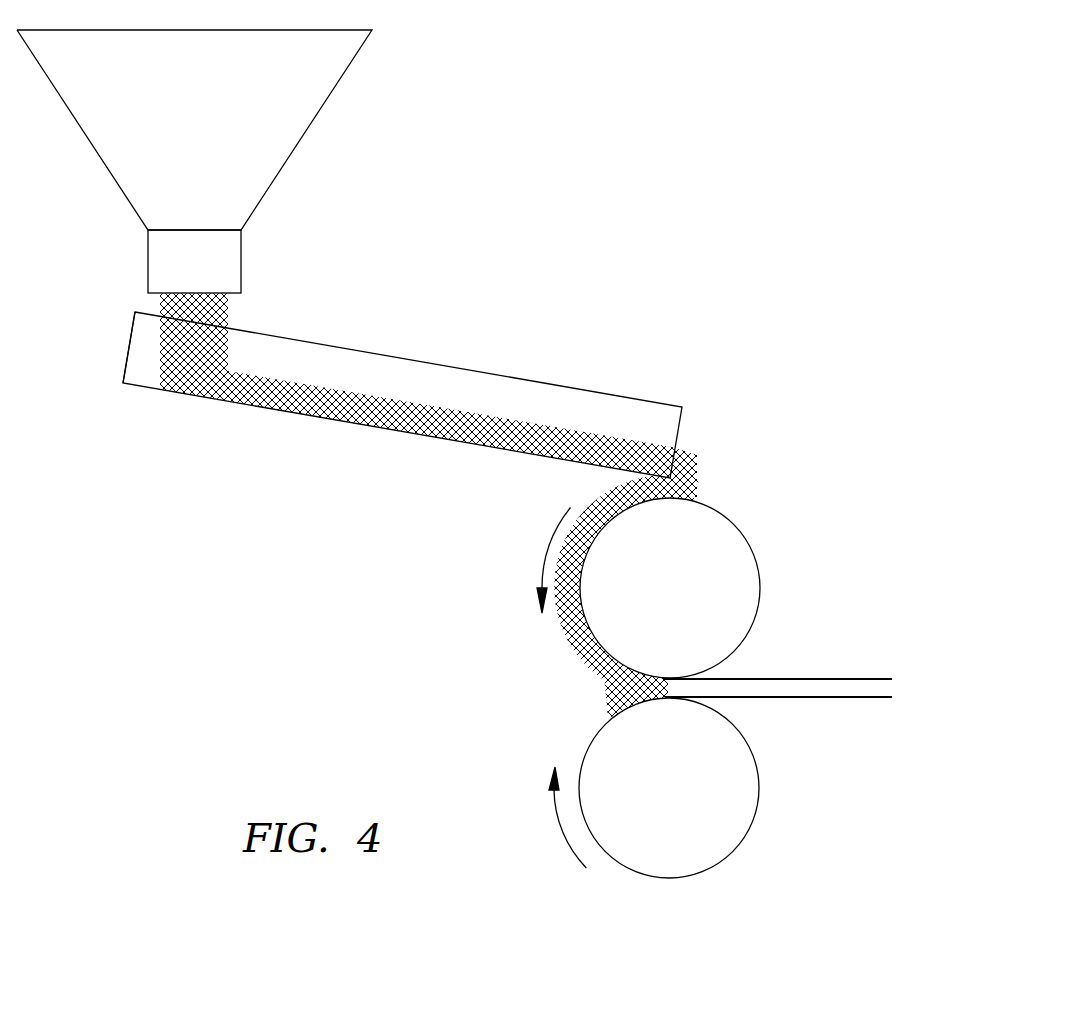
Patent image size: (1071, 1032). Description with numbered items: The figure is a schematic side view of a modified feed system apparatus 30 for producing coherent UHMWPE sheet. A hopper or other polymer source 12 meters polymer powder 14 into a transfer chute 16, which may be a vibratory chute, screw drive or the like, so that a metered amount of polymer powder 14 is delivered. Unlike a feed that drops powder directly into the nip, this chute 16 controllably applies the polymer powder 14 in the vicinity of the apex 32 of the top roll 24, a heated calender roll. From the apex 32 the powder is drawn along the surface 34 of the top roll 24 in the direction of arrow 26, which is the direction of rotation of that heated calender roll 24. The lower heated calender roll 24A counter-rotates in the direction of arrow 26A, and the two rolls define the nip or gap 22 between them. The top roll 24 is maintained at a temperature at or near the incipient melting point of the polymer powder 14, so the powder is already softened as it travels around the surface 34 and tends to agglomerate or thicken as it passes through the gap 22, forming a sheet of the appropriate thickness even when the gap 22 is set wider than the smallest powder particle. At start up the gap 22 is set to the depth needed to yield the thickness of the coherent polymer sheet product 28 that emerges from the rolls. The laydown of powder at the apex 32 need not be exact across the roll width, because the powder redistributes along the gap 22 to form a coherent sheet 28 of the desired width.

The hopper 12 is at (312, 90).
The polymer powder 14 is at (465, 420).
The transfer chute 16 is at (137, 368).
The gap 22 is at (670, 677).
The top roll 24 is at (684, 638).
The heated calender roll 24A is at (692, 838).
The arrow 26 is at (549, 549).
The arrow 26A is at (557, 818).
The coherent polymer sheet product 28 is at (832, 686).
The modified feed system apparatus 30 is at (546, 274).
The apex 32 is at (692, 502).
The surface 34 is at (582, 600).